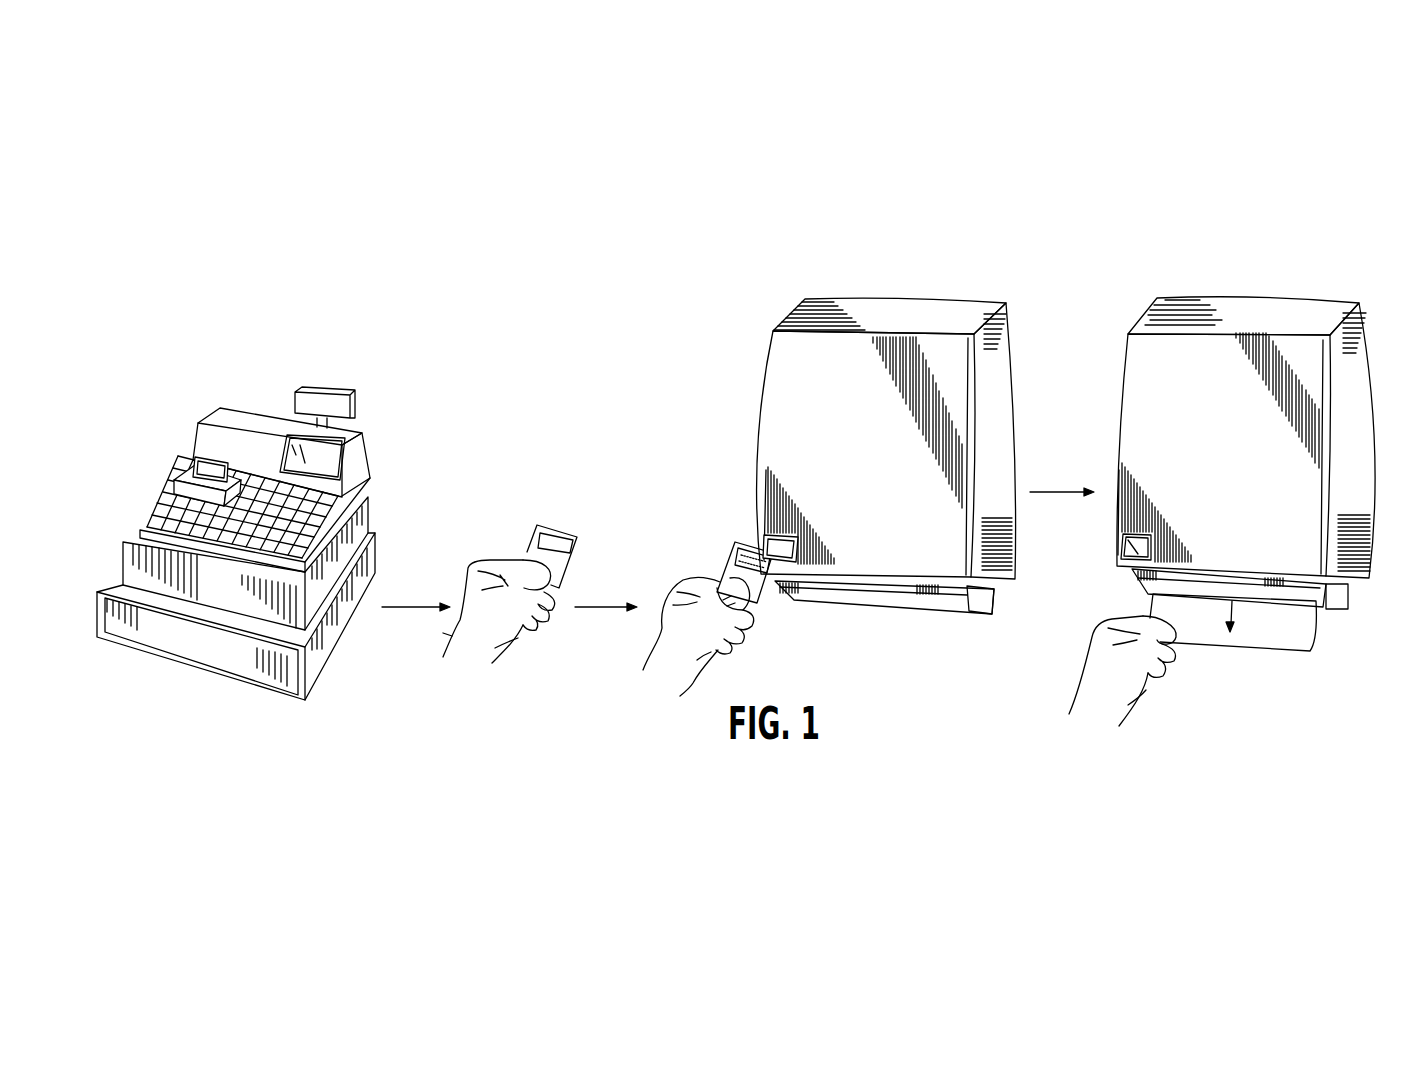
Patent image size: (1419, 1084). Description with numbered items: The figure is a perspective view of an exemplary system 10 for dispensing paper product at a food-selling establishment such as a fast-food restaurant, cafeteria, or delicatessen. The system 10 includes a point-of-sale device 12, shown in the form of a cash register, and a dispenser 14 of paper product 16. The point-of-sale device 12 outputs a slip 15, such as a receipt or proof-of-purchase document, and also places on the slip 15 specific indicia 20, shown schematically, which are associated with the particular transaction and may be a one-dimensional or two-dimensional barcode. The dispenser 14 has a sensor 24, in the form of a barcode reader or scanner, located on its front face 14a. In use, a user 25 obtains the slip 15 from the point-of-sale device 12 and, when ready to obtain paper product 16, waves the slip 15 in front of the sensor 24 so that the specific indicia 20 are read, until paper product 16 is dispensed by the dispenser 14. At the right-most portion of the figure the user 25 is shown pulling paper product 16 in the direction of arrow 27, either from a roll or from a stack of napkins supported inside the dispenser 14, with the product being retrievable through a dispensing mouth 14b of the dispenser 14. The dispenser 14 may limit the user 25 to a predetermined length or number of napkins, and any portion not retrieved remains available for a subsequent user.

The system 10 is at (488, 315).
The point-of-sale device 12 is at (242, 409).
The dispenser 14 is at (868, 296).
The front face 14a is at (882, 507).
The dispensing mouth 14b is at (947, 614).
The slip 15 is at (205, 455).
The paper product 16 is at (1253, 651).
The specific indicia 20 is at (193, 471).
The sensor 24 is at (798, 551).
The user 25 is at (460, 637).
The arrow 27 is at (1233, 606).